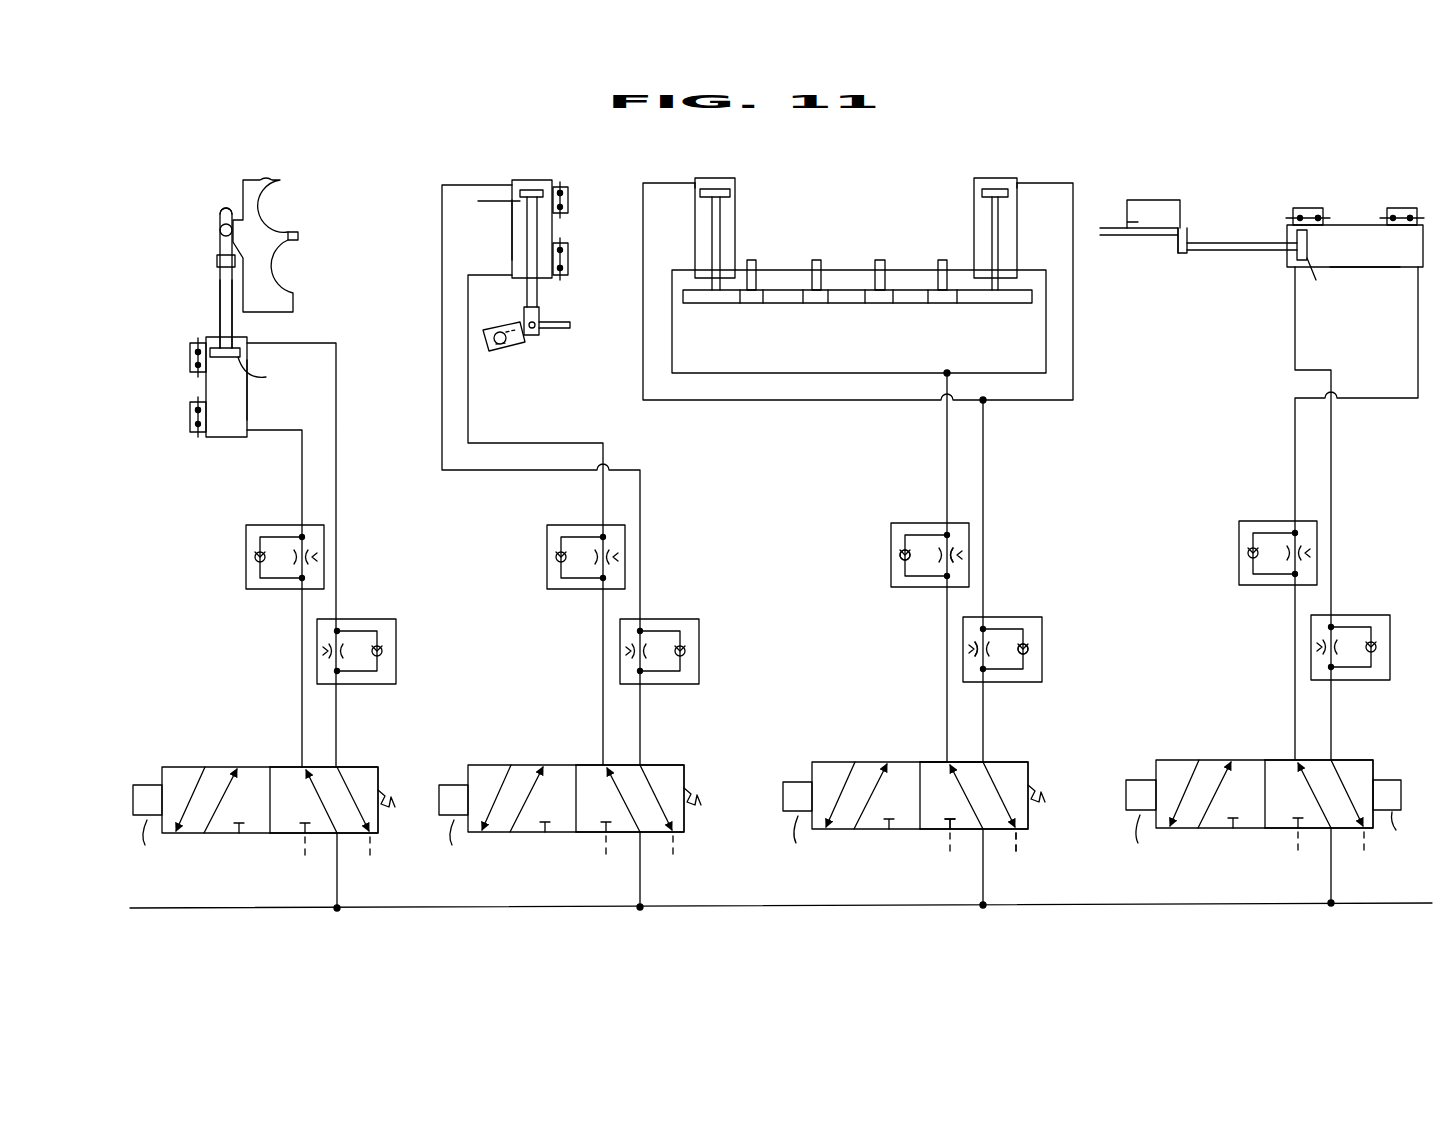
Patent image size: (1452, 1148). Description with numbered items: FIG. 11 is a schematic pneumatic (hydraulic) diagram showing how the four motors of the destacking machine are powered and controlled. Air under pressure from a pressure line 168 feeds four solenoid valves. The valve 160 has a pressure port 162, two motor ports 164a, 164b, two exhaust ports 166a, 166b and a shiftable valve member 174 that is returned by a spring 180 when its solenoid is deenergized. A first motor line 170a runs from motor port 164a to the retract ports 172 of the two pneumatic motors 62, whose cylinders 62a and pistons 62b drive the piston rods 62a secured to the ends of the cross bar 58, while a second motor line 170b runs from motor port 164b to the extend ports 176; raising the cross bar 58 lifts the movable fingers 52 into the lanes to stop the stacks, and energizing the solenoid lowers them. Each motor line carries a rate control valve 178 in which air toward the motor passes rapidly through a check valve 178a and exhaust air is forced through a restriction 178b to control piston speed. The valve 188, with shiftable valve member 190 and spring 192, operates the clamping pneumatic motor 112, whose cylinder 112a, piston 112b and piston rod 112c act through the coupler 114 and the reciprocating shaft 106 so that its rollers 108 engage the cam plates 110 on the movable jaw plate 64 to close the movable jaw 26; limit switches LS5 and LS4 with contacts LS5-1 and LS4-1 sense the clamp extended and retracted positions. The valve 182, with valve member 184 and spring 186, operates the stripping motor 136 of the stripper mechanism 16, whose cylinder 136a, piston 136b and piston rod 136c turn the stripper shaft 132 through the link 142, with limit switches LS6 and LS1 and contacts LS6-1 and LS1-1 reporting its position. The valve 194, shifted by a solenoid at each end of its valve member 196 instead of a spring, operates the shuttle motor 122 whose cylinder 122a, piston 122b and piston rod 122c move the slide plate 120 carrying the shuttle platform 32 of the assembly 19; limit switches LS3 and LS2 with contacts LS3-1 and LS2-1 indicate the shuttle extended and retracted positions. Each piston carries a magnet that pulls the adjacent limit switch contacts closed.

The movable jaw 26 is at (278, 176).
The movable jaw plate 64 is at (296, 236).
The reciprocating shaft 106 is at (220, 283).
The rollers 108 is at (222, 224).
The cam plates 110 is at (222, 239).
The coupler 114 is at (217, 260).
The pneumatic motor 112 is at (232, 437).
The cylinder 112a is at (250, 398).
The piston 112b is at (242, 353).
The piston rod 112c is at (221, 313).
The limit switch LS5 is at (190, 372).
The limit switch contacts LS5-1 is at (192, 352).
The limit switch LS4 is at (190, 430).
The limit switch contacts LS4-1 is at (192, 410).
The pneumatic motor 136 is at (545, 178).
The cylinder 136a is at (512, 221).
The piston 136b is at (518, 186).
The piston rod 136c is at (538, 294).
The limit switch LS6 is at (568, 186).
The limit switch contacts LS6-1 is at (568, 201).
The limit switch LS1 is at (568, 244).
The limit switch contacts LS1-1 is at (568, 256).
The link 142 is at (527, 338).
The stripper mechanism 16 is at (578, 323).
The stripper shaft 132 is at (502, 330).
The retract ports 172 is at (685, 270).
The first motor line 170a is at (947, 447).
The second motor line 170b is at (983, 447).
The pneumatic motors 62 is at (716, 178).
The extend ports 176 is at (695, 186).
The pistons 62b is at (730, 198).
The cylinders 62a is at (735, 220).
The cross bar 58 is at (850, 304).
The movable fingers 52 is at (812, 266).
The pneumatic motor 122 is at (1287, 264).
The cylinder 122a is at (1366, 268).
The piston 122b is at (1290, 234).
The piston rod 122c is at (1225, 251).
The slide plate 120 is at (1140, 236).
The shuttle platform 32 is at (1156, 205).
The assembly 19 is at (1190, 212).
The limit switch LS3 is at (1293, 210).
The limit switch contacts LS3-1 is at (1313, 208).
The limit switch LS2 is at (1387, 212).
The limit switch contacts LS2-1 is at (1408, 208).
The rate control valve 178 is at (891, 537).
The check valve 178a is at (902, 558).
The restriction 178b is at (962, 550).
The valve 188 is at (196, 767).
The shiftable valve member 190 is at (360, 767).
The spring 192 is at (387, 790).
The valve 182 is at (496, 765).
The shiftable valve member 184 is at (663, 765).
The spring 186 is at (693, 788).
The valve 160 is at (828, 762).
The pressure port 162 is at (983, 833).
The motor port 164a is at (947, 762).
The motor port 164b is at (985, 762).
The shiftable valve member 174 is at (1012, 765).
The spring 180 is at (1036, 786).
The exhaust port 166a is at (946, 832).
The exhaust port 166b is at (1018, 830).
The valve 194 is at (1174, 760).
The shiftable valve member 196 is at (1354, 762).
The pressure line 168 is at (775, 907).